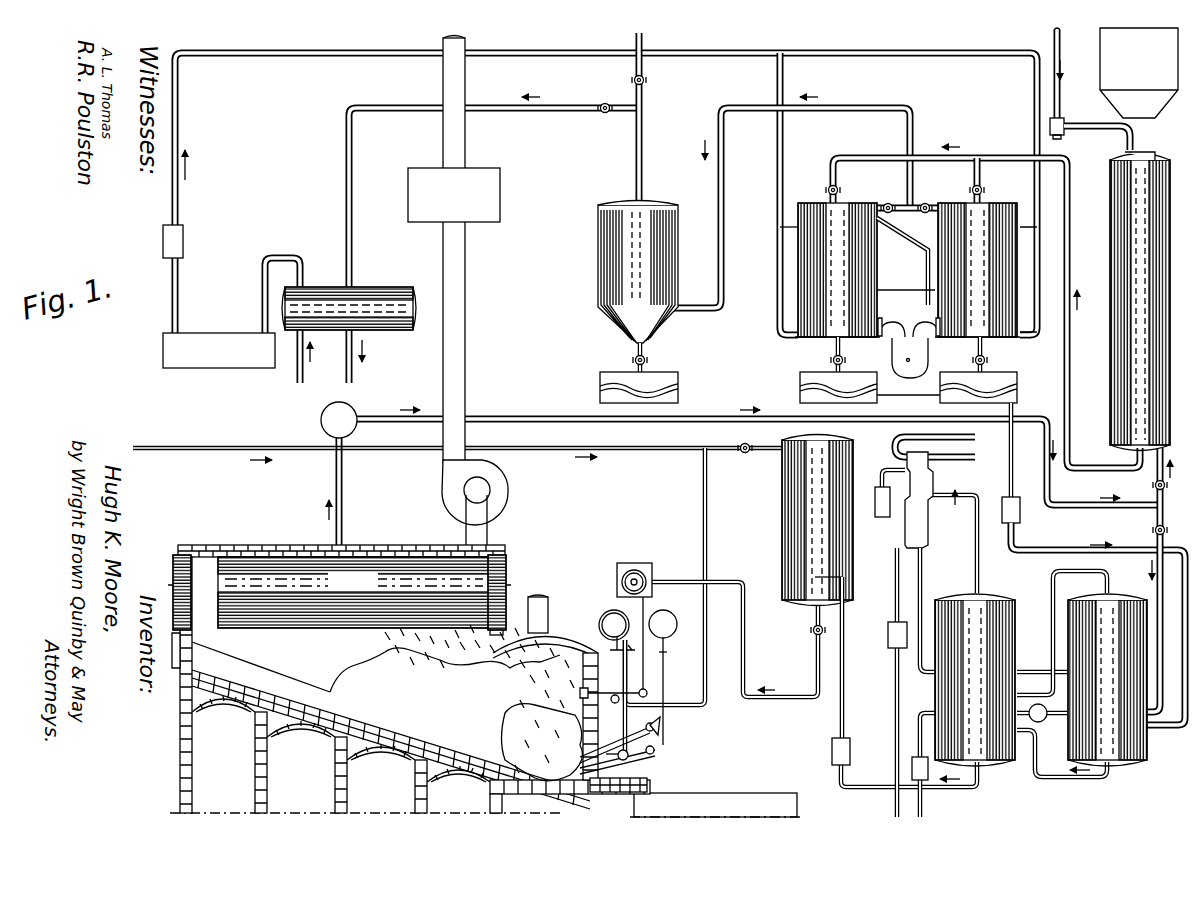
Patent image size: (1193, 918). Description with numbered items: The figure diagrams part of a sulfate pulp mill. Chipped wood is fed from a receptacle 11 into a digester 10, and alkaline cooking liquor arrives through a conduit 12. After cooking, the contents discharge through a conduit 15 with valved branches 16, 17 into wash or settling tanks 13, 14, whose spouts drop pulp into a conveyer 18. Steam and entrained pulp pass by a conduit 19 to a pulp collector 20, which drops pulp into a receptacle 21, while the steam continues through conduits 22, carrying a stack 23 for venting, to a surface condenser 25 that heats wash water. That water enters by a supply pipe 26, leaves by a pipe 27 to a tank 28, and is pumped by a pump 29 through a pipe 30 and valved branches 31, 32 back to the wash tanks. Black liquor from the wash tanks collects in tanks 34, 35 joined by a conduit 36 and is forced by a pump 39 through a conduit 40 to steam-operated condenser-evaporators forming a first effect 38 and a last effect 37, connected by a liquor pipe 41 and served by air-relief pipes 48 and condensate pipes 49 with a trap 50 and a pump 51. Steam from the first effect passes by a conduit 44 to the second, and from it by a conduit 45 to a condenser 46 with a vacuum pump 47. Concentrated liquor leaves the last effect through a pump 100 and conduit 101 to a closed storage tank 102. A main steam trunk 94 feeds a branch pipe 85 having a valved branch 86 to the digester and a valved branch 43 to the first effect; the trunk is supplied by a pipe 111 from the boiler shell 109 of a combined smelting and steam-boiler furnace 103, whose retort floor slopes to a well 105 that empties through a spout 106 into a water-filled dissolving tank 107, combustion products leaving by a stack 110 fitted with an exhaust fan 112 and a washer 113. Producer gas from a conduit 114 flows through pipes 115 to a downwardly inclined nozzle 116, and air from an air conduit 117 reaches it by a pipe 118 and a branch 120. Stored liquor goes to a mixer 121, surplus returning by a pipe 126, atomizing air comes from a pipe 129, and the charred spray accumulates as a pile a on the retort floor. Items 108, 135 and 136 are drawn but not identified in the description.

The digester 10 is at (1110, 188).
The receptacle 11 is at (1139, 73).
The conduit 12 is at (1062, 49).
The wash or settling tank 13 is at (880, 258).
The wash or settling tank 14 is at (942, 280).
The conduit 15 is at (1073, 370).
The valve 16 is at (840, 190).
The valve 17 is at (985, 190).
The conveyer 18 is at (908, 330).
The conduit 19 is at (860, 106).
The pulp collector 20 is at (596, 246).
The receptacle 21 is at (672, 376).
The conduit 22 is at (386, 112).
The stack 23 is at (645, 39).
The surface condenser 25 is at (372, 288).
The supply pipe 26 is at (297, 368).
The pipe 27 is at (262, 274).
The tank 28 is at (219, 350).
The pump 29 is at (185, 236).
The pipe 30 is at (283, 56).
The valved branch 31 is at (781, 143).
The valved branch 32 is at (1034, 99).
The tank 34 is at (796, 378).
The tank 35 is at (1017, 378).
The conduit 36 is at (890, 392).
The second effect 37 is at (980, 602).
The first effect 38 is at (1118, 596).
The pump 39 is at (1021, 515).
The conduit 40 is at (1128, 550).
The pipe 41 is at (1082, 781).
The valved branch 43 is at (1163, 542).
The conduit 44 is at (1052, 575).
The conduit 45 is at (972, 550).
The condenser 46 is at (932, 480).
The vacuum pump 47 is at (880, 517).
The air-relief pipe 48 is at (918, 605).
The condensation water pipe 49 is at (928, 712).
The trap 50 is at (1033, 740).
The pump 51 is at (925, 775).
The branch pipe 85 is at (527, 414).
The valved branch 86 is at (1156, 478).
The main steam trunk 94 is at (319, 420).
The pump 100 is at (848, 748).
The conduit 101 is at (845, 670).
The closed storage tank 102 is at (780, 503).
The combined smelting and steam-boiler furnace 103 is at (396, 679).
The well 105 is at (575, 778).
The spout 106 is at (650, 778).
The receiving and dissolving tank 107 is at (798, 805).
The pipe 108 is at (745, 645).
The boiler shell 109 is at (339, 592).
The stack 110 is at (487, 525).
The pipe 111 is at (333, 480).
The exhaust fan 112 is at (506, 490).
The washer 113 is at (454, 195).
The conduit 114 is at (545, 607).
The pipe 115 is at (628, 663).
The nozzle 116 is at (597, 772).
The air conduit 117 is at (672, 620).
The pipe 118 is at (660, 714).
The branch 120 is at (660, 745).
The mixer 121 is at (625, 563).
The pipe 126 is at (640, 672).
The pipe 129 is at (708, 550).
The pipe 135 is at (665, 452).
The valve 136 is at (745, 453).
The pile a is at (456, 703).